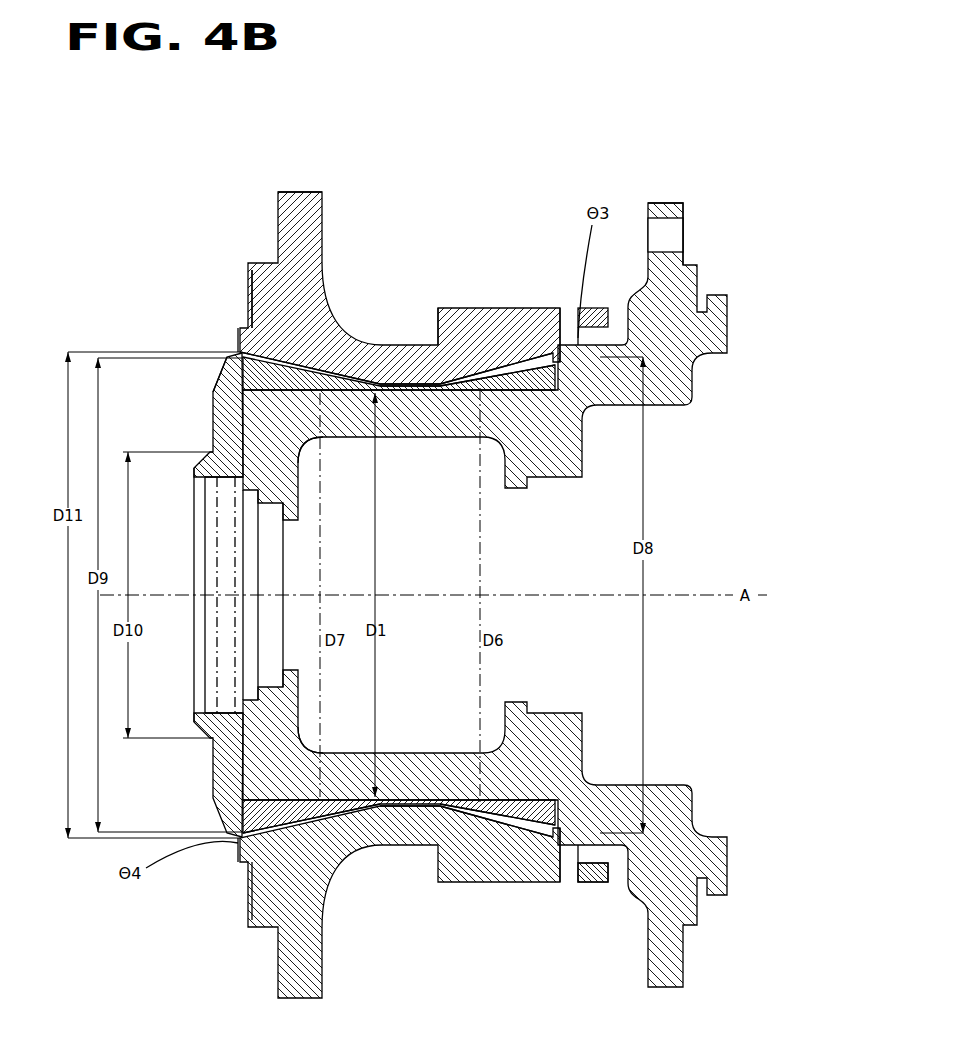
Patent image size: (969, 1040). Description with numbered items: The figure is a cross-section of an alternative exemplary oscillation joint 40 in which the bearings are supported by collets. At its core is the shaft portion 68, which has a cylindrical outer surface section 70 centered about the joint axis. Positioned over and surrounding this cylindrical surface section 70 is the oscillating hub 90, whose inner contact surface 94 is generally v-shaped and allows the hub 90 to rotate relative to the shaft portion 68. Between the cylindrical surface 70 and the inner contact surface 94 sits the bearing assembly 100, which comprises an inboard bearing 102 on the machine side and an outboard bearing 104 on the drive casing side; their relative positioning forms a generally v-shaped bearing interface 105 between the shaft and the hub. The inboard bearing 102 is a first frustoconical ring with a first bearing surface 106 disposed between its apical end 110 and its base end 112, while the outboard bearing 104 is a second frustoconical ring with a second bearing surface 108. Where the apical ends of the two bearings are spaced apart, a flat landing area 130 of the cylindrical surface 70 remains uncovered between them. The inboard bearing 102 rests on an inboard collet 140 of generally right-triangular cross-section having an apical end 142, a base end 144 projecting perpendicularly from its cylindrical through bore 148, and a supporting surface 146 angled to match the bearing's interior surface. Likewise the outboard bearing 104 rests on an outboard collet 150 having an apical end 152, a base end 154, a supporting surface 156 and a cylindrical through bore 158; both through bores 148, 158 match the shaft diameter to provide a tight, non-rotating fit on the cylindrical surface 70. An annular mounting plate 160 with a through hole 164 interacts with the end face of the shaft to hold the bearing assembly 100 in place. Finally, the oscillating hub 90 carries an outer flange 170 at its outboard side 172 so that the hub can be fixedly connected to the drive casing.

The oscillation joint 40 is at (622, 150).
The shaft portion 68 is at (540, 420).
The cylindrical outer surface section 70 is at (357, 390).
The oscillating hub 90 is at (490, 374).
The inner contact surface 94 is at (242, 315).
The bearing assembly 100 is at (303, 338).
The inboard bearing 102 is at (522, 358).
The outboard bearing 104 is at (258, 870).
The bearing interface 105 is at (397, 386).
The first bearing surface 106 is at (470, 883).
The second bearing surface 108 is at (316, 812).
The apical end 110 is at (450, 883).
The base end 112 is at (560, 877).
The flat landing area 130 is at (422, 830).
The inboard collet 140 is at (612, 332).
The apical end 142 is at (420, 365).
The base end 144 is at (642, 282).
The supporting surface 146 is at (507, 367).
The cylindrical through bore 148 is at (503, 877).
The outboard collet 150 is at (240, 352).
The apical end 152 is at (378, 382).
The base end 154 is at (218, 380).
The supporting surface 156 is at (312, 400).
The cylindrical through bore 158 is at (267, 790).
The annular mounting plate 160 is at (216, 436).
The through hole 164 is at (198, 463).
The outer flange 170 is at (298, 200).
The outboard side 172 is at (238, 328).